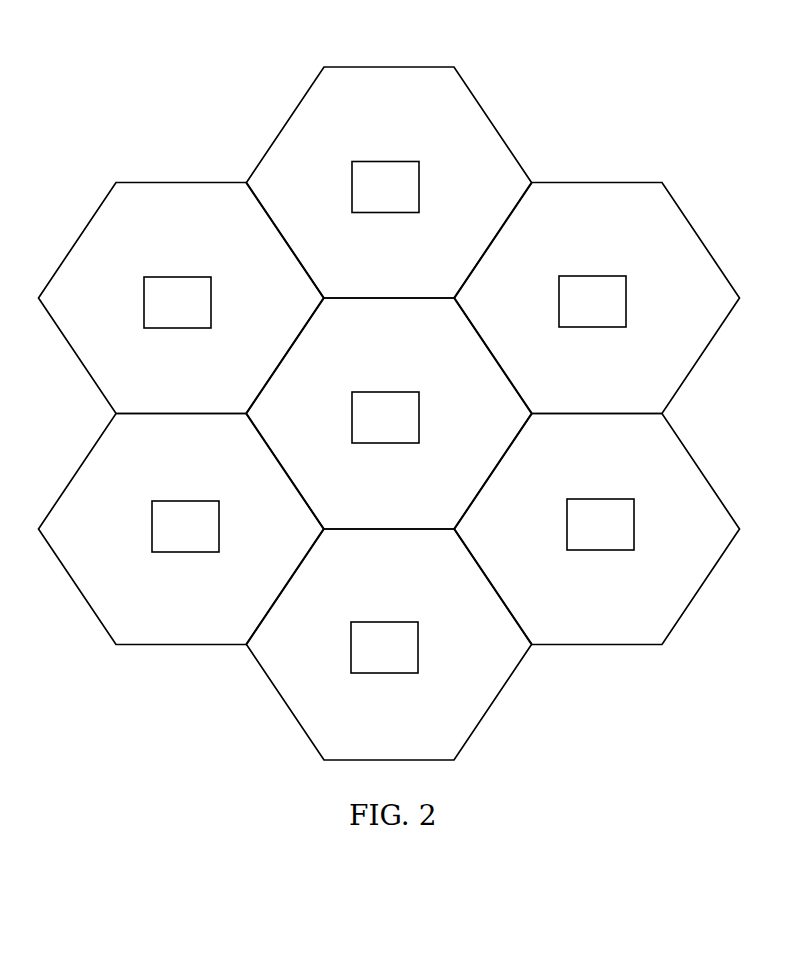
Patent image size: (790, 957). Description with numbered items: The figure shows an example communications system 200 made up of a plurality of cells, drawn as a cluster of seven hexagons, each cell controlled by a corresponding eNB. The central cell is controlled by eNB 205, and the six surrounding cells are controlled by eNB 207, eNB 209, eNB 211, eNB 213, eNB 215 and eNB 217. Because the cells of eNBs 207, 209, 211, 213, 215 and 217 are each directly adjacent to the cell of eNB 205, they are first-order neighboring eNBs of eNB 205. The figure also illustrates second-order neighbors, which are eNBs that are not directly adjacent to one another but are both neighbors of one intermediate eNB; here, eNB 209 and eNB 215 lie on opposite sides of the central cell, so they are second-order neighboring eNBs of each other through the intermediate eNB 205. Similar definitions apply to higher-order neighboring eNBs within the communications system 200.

The communications system 200 is at (170, 125).
The eNB 205 is at (419, 411).
The eNB 207 is at (634, 518).
The eNB 209 is at (626, 295).
The eNB 211 is at (419, 180).
The eNB 213 is at (211, 296).
The eNB 215 is at (219, 520).
The eNB 217 is at (418, 641).